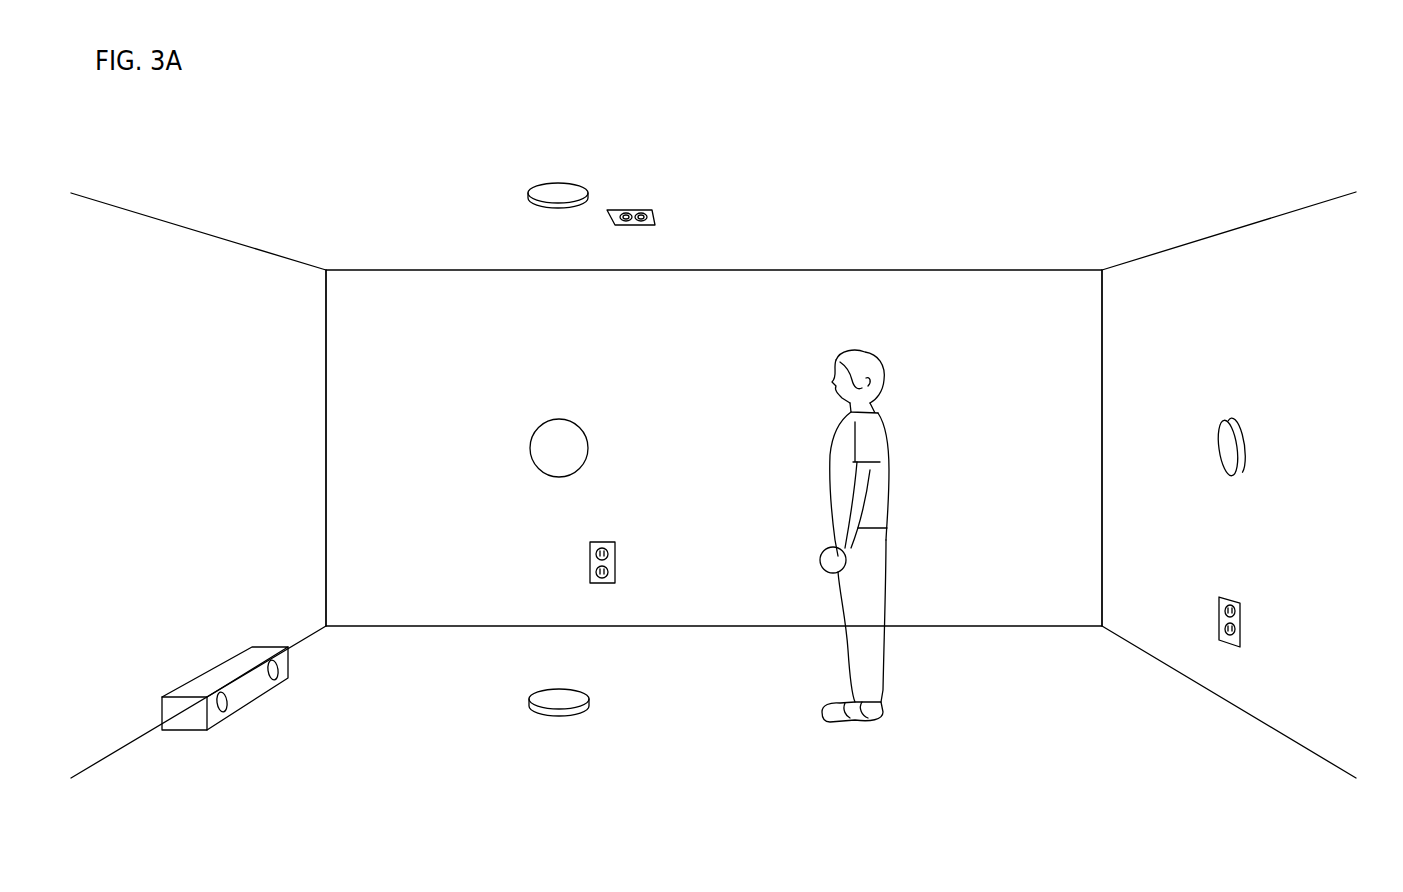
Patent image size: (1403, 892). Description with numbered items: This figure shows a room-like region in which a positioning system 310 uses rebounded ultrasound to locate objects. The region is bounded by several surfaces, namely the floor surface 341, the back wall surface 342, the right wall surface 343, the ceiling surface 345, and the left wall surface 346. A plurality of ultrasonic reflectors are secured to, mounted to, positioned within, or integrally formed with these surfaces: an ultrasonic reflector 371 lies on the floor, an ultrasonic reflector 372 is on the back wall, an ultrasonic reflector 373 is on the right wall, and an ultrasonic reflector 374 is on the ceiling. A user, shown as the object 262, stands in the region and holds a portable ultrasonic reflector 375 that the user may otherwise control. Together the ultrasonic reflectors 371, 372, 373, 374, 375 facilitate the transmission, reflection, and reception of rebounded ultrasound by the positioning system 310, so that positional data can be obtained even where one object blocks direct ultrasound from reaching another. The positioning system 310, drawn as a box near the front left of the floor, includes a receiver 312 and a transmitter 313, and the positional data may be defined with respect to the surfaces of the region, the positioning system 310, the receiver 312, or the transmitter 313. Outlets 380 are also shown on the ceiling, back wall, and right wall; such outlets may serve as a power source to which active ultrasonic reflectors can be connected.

The object 262 is at (878, 353).
The positioning system 310 is at (203, 671).
The receiver of the positioning system 312 is at (273, 658).
The transmitter of the positioning system 313 is at (217, 700).
The surface 341 is at (1074, 671).
The surface 342 is at (1053, 321).
The surface 343 is at (1121, 458).
The surface 345 is at (1079, 254).
The surface 346 is at (271, 560).
The ultrasonic reflector 371 is at (562, 690).
The ultrasonic reflector 372 is at (560, 418).
The ultrasonic reflector 373 is at (1231, 418).
The ultrasonic reflector 374 is at (582, 185).
The portable ultrasonic reflector 375 is at (823, 550).
The outlet 380 is at (635, 208).